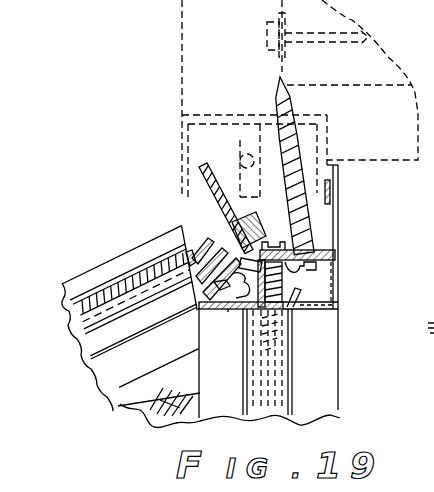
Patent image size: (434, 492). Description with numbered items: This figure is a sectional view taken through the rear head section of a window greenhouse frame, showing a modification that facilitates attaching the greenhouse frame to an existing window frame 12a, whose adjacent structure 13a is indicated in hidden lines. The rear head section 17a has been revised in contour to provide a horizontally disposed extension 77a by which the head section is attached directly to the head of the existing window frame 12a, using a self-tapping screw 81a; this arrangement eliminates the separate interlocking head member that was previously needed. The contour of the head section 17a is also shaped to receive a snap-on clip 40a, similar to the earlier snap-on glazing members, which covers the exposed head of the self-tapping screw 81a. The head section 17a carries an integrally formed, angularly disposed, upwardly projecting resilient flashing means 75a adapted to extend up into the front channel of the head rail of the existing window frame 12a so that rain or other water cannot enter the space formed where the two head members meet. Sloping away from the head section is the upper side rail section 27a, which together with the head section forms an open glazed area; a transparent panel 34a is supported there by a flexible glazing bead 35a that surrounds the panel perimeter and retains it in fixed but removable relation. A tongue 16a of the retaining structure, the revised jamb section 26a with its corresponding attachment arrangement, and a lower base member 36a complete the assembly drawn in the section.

The existing window frame 12a is at (178, 143).
The wall structure 13a is at (182, 27).
The clip tongue 16a is at (218, 291).
The head section 17a is at (226, 309).
The jamb section 26a is at (274, 386).
The upper side rail section 27a is at (133, 251).
The transparent panel 34a is at (72, 332).
The glazing bead 35a is at (190, 251).
The base panel 36a is at (160, 431).
The snap-on clip 40a is at (133, 376).
The flashing means 75a is at (200, 188).
The horizontally disposed extension 77a is at (336, 238).
The self-tapping screw 81a is at (304, 222).